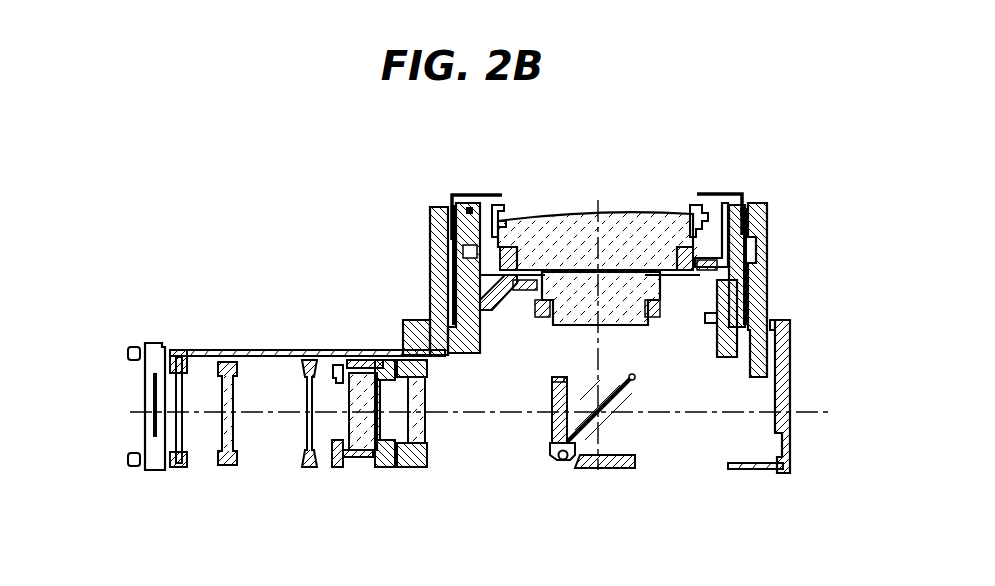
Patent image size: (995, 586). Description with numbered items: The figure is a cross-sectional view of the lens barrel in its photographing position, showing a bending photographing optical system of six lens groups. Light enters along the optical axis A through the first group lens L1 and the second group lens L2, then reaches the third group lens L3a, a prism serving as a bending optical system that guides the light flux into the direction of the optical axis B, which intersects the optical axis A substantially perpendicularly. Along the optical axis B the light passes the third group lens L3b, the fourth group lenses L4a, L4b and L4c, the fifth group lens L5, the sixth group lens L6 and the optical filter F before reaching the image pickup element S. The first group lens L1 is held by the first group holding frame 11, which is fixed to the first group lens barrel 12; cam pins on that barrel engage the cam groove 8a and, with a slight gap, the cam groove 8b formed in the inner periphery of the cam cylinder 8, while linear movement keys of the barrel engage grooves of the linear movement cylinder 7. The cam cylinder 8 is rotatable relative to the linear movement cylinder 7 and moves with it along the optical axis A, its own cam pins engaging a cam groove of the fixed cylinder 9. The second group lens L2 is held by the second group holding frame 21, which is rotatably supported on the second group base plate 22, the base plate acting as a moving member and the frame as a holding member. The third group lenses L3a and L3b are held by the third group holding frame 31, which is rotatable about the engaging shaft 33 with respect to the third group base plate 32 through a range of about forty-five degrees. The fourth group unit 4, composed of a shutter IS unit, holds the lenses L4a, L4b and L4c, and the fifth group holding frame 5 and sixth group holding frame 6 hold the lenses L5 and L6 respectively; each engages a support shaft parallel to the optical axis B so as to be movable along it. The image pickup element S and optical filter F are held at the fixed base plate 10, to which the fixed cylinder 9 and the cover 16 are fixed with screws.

The optical axis B is at (458, 412).
The optical axis A is at (598, 200).
The image pickup element S is at (140, 433).
The optical filter F is at (170, 375).
The sixth group holding frame 6 is at (227, 350).
The cover 16 is at (255, 350).
The sixth group lens L6 is at (215, 437).
The fifth group lens L5 is at (305, 432).
The fifth group holding frame 5 is at (297, 362).
The fourth group lens L4c is at (333, 445).
The fourth group lens L4b is at (393, 447).
The fourth group lens L4a is at (447, 440).
The fourth group unit 4 is at (387, 367).
The third group lens L3b is at (552, 385).
The third group holding frame 31 is at (550, 453).
The engaging shaft 33 is at (563, 460).
The third group lens L3a is at (606, 442).
The third group base plate 32 is at (637, 462).
The cam groove 8a is at (440, 205).
The fixed cylinder 9 is at (412, 310).
The second group base plate 22 is at (495, 287).
The second group holding frame 21 is at (668, 290).
The first group lens L1 is at (625, 225).
The second group lens L2 is at (578, 272).
The first group holding frame 11 is at (710, 252).
The first group lens barrel 12 is at (733, 223).
The cam cylinder 8 is at (762, 292).
The cam groove 8b is at (762, 243).
The linear movement cylinder 7 is at (743, 350).
The fixed base plate 10 is at (746, 468).